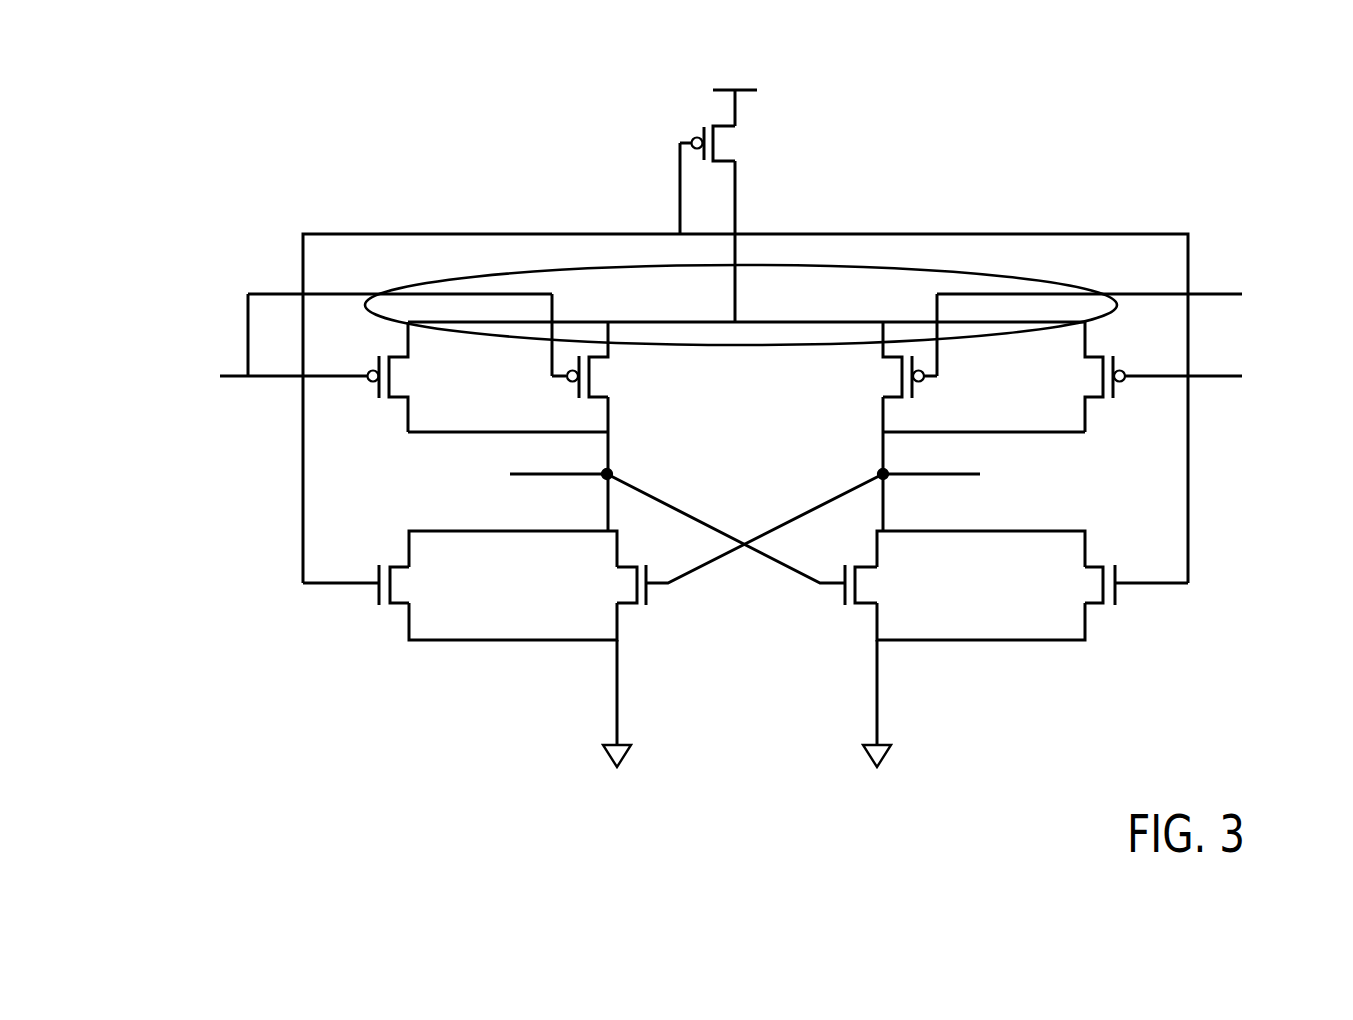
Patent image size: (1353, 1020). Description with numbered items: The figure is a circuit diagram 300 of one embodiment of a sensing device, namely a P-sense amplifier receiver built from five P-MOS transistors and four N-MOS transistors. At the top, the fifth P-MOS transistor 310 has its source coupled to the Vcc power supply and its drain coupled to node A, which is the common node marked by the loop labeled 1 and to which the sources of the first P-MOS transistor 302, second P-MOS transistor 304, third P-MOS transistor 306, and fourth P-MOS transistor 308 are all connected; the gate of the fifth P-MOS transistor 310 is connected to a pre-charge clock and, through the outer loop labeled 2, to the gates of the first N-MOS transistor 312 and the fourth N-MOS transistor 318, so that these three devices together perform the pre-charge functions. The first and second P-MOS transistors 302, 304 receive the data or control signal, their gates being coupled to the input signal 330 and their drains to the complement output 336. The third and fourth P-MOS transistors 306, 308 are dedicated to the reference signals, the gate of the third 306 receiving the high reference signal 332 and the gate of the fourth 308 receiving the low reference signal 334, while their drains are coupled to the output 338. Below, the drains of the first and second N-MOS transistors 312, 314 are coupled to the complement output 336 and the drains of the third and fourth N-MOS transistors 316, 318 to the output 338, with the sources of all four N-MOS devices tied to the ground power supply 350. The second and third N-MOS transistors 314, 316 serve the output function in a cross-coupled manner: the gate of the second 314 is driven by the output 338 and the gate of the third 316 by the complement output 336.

The circuit diagram 300 is at (220, 78).
The first loop / node A region 1 is at (741, 239).
The second loop 2 is at (745, 392).
The P-MOS transistor P5 310 is at (737, 140).
The P-MOS transistor P1 302 is at (411, 377).
The P-MOS transistor P2 304 is at (608, 365).
The P-MOS transistor P3 306 is at (874, 365).
The P-MOS transistor P4 308 is at (1078, 377).
The N-MOS transistor N1 312 is at (418, 590).
The N-MOS transistor N2 314 is at (607, 590).
The N-MOS transistor N3 316 is at (886, 590).
The N-MOS transistor N4 318 is at (1061, 590).
The input signal 330 is at (252, 402).
The high reference signal 332 is at (1135, 296).
The low reference signal 334 is at (1227, 393).
The complement output 336 is at (531, 488).
The output 338 is at (958, 488).
The ground power supply 350 is at (750, 752).